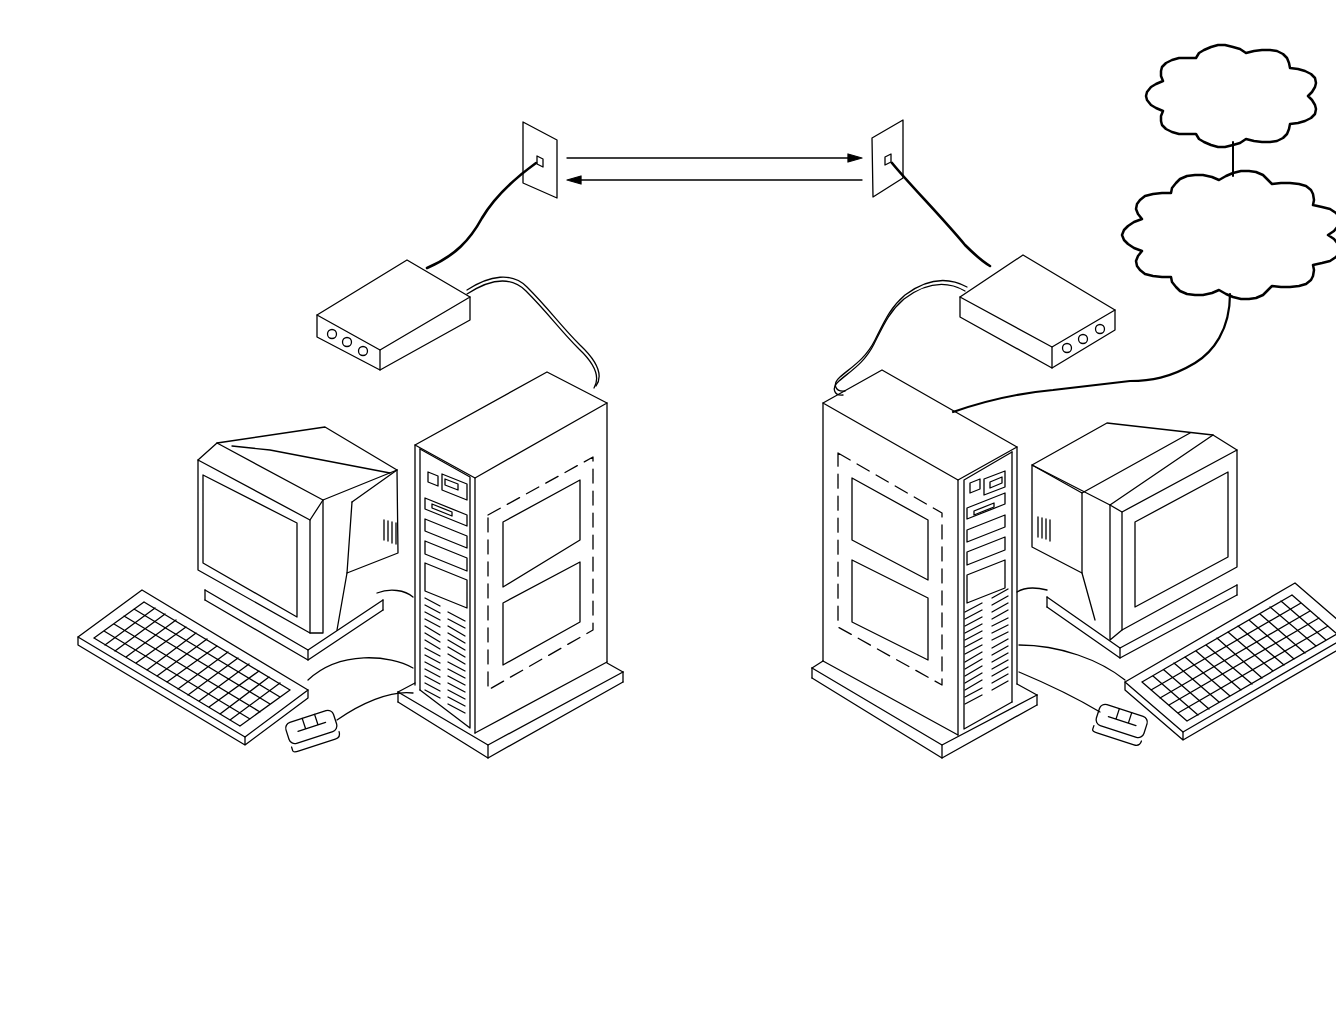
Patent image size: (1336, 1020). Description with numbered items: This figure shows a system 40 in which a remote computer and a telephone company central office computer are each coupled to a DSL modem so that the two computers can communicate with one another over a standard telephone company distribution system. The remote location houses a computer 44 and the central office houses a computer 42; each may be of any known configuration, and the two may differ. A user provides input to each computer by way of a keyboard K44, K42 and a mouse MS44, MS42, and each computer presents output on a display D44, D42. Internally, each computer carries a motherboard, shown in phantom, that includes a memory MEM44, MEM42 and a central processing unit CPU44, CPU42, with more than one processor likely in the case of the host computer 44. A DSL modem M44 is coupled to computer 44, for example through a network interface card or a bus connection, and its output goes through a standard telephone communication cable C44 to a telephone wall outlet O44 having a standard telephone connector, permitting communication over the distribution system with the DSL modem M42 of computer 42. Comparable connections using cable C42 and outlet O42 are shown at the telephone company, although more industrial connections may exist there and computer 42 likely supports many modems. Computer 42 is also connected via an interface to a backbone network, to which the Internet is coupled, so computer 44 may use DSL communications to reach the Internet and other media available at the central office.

The system 40 is at (248, 165).
The telephone wall outlet O44 is at (527, 123).
The telephone communication cable C44 is at (480, 217).
The DSL modem M44 is at (360, 288).
The computer 44 is at (555, 718).
The memory MEM44 is at (583, 510).
The central processing unit CPU44 is at (583, 590).
The display D44 is at (195, 512).
The keyboard K44 is at (165, 692).
The mouse MS44 is at (322, 738).
The telephone wall outlet O42 is at (888, 122).
The telephone communication cable C42 is at (947, 207).
The DSL modem M42 is at (1069, 282).
The computer 42 is at (877, 718).
The memory MEM42 is at (848, 510).
The central processing unit CPU42 is at (848, 590).
The display D42 is at (1240, 505).
The keyboard K42 is at (1273, 687).
The mouse MS42 is at (1110, 737).